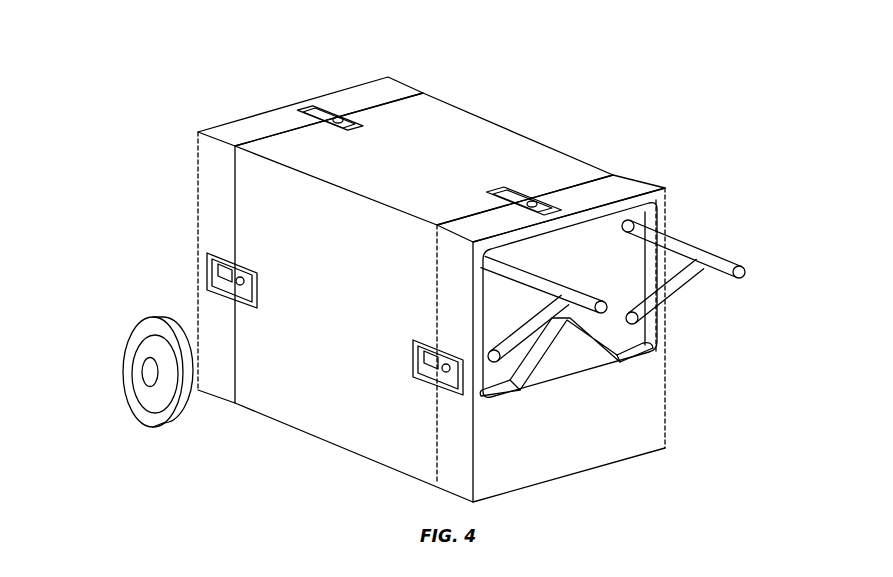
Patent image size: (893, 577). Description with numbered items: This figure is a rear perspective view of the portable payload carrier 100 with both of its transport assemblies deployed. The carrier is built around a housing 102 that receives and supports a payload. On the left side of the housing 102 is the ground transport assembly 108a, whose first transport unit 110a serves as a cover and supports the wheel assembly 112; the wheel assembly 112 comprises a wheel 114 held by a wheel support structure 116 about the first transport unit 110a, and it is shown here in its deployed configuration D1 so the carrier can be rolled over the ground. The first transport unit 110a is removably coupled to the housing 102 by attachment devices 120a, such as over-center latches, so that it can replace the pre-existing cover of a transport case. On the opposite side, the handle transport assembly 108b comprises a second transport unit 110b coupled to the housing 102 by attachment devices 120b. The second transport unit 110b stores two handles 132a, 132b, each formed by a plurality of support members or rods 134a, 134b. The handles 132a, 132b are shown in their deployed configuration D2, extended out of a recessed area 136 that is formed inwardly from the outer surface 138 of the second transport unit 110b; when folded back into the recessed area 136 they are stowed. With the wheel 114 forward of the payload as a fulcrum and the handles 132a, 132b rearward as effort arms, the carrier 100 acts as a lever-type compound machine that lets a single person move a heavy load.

The portable payload carrier 100 is at (240, 70).
The housing 102 is at (490, 123).
The ground transport assembly 108a is at (192, 123).
The handle transport assembly 108b is at (675, 185).
The first transport unit 110a is at (355, 95).
The second transport unit 110b is at (657, 418).
The wheel assembly 112 is at (108, 365).
The wheel 114 is at (143, 397).
The wheel support structure 116 is at (196, 353).
The attachment devices 120a is at (358, 132).
The attachment devices 120b is at (500, 192).
The handle 132a is at (528, 258).
The handle 132b is at (695, 233).
The support members or rods 134a is at (513, 343).
The support members or rods 134b is at (683, 283).
The recessed area 136 is at (611, 262).
The outer surface 138 is at (577, 451).
The deployed configuration D1 is at (130, 308).
The deployed configuration D2 is at (697, 142).